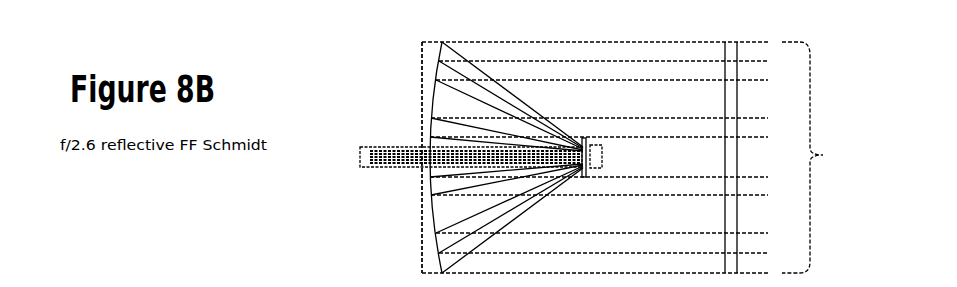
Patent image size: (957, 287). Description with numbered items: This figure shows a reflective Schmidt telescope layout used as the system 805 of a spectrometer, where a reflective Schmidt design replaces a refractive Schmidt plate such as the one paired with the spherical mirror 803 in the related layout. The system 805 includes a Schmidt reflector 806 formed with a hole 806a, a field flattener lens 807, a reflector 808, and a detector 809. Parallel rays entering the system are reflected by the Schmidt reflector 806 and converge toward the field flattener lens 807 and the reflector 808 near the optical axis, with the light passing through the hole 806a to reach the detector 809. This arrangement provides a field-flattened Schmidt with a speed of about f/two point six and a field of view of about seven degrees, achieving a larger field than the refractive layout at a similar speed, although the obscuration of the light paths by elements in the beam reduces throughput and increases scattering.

The spherical mirror 803 is at (815, 0).
The system 805 is at (833, 157).
The Schmidt reflector 806 is at (433, 53).
The hole 806a is at (423, 150).
The field flattener lens 807 is at (583, 140).
The reflector 808 is at (601, 145).
The detector 809 is at (362, 157).